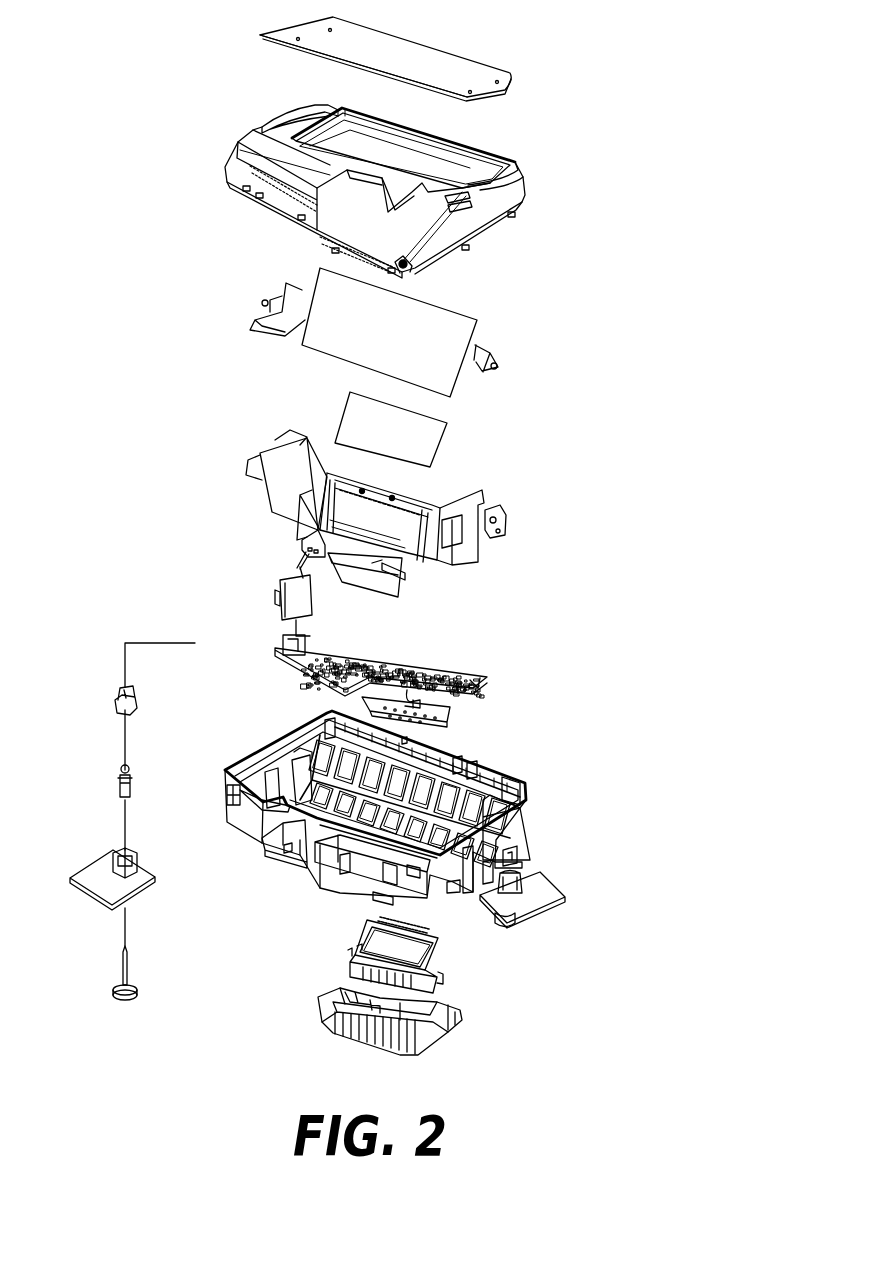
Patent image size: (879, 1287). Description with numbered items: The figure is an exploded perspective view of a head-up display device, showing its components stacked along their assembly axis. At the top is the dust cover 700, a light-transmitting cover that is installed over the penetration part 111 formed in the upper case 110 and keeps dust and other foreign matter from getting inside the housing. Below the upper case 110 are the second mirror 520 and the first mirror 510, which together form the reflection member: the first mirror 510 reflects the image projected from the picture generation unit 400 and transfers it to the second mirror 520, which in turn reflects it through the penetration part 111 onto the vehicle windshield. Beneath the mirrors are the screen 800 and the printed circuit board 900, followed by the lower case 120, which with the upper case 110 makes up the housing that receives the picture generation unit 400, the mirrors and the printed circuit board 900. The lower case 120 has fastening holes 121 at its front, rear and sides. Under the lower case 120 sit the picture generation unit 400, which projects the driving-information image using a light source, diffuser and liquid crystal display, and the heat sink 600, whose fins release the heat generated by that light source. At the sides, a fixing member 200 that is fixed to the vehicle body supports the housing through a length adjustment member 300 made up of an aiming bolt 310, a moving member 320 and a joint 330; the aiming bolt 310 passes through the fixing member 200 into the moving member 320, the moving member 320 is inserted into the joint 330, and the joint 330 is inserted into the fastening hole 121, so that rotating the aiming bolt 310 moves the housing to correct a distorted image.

The dust cover 700 is at (468, 66).
The upper case 110 is at (527, 204).
The penetration part 111 is at (425, 158).
The second mirror 520 is at (447, 320).
The first mirror 510 is at (433, 441).
The screen 800 is at (292, 433).
The printed circuit board 900 is at (428, 647).
The lower case 120 is at (273, 743).
The fastening hole 121 is at (267, 857).
The length adjustment member 300 is at (513, 840).
The fixing member 200 is at (88, 870).
The joint 330 is at (118, 708).
The moving member 320 is at (120, 775).
The aiming bolt 310 is at (120, 972).
The picture generation unit 400 is at (437, 952).
The heat sink 600 is at (447, 1037).